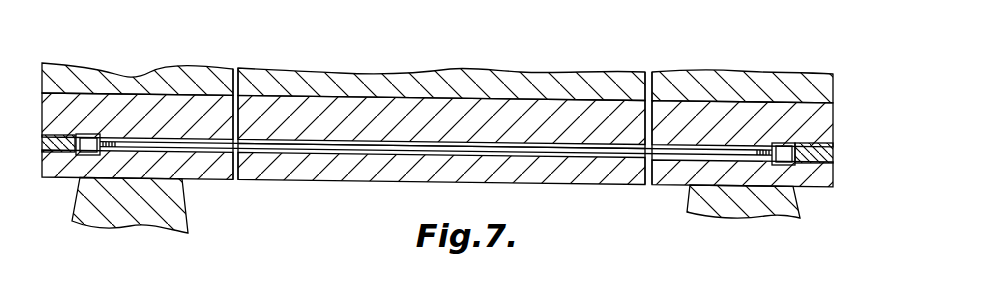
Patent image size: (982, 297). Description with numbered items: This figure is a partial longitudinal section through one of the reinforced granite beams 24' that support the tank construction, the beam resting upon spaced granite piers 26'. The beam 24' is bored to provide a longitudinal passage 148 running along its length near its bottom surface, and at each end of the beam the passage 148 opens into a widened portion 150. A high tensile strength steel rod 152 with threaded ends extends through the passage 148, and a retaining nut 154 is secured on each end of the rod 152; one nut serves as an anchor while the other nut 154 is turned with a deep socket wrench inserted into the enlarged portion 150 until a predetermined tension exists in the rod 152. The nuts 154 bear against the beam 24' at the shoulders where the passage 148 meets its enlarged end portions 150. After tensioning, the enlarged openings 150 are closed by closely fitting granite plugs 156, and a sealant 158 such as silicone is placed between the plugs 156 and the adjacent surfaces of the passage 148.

The longitudinal passage 148 is at (304, 152).
The widened portion of the passage 150 is at (112, 130).
The steel rod or stranded cable 152 is at (572, 150).
The retaining nut or washer 154 is at (148, 78).
The granite plug 156 is at (66, 92).
The sealant 158 is at (45, 179).
The reinforced granite beam 24' is at (430, 157).
The granite pier 26' is at (436, 227).